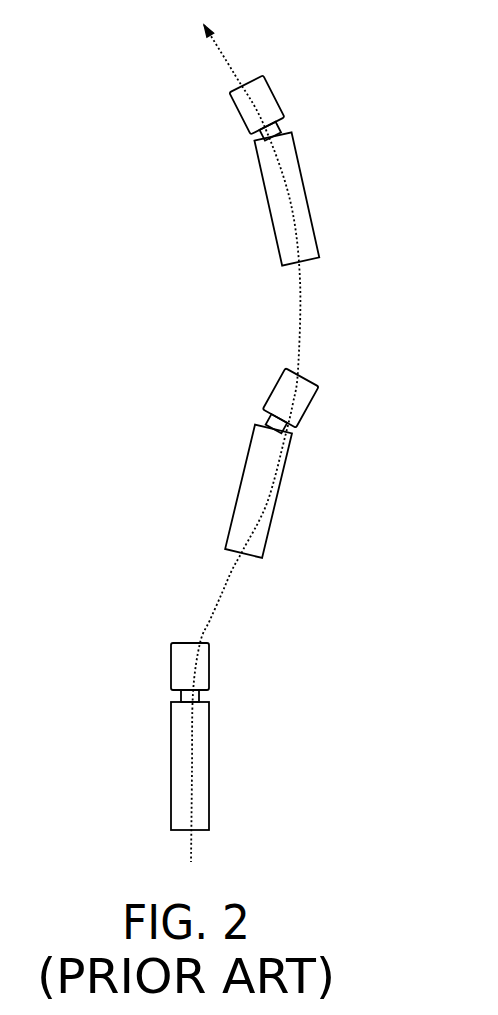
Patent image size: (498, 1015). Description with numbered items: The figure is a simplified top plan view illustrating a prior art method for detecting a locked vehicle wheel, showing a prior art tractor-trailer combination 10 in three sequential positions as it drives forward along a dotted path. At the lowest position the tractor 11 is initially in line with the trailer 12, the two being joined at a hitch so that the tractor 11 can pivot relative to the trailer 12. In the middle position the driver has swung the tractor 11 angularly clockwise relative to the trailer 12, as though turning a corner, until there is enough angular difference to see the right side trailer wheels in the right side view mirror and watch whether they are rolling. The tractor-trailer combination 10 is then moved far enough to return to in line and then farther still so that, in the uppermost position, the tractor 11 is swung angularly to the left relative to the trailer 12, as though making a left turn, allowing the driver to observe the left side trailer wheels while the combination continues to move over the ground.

The tractor-trailer combination 10 is at (255, 726).
The tractor 11 is at (232, 718).
The trailer 12 is at (203, 805).